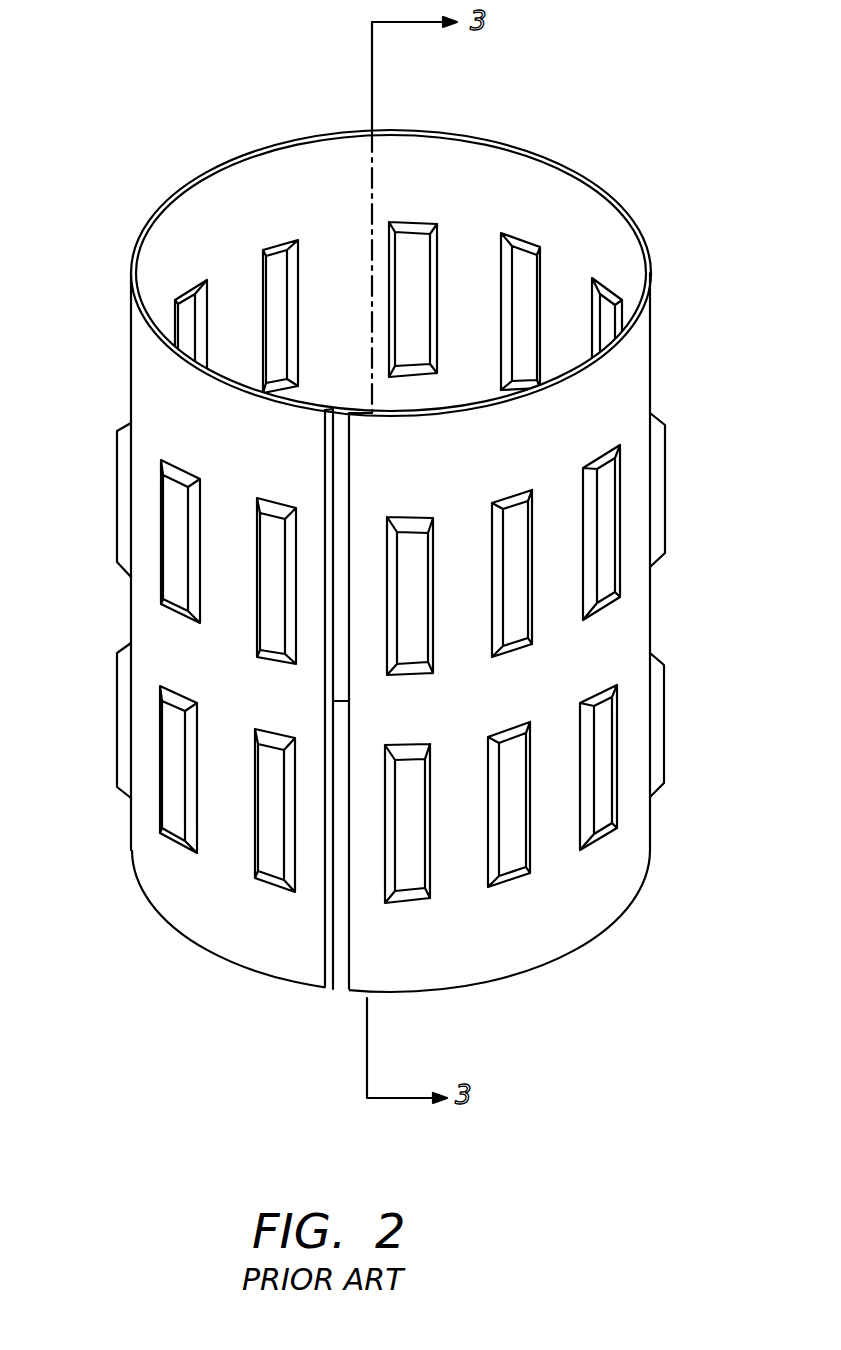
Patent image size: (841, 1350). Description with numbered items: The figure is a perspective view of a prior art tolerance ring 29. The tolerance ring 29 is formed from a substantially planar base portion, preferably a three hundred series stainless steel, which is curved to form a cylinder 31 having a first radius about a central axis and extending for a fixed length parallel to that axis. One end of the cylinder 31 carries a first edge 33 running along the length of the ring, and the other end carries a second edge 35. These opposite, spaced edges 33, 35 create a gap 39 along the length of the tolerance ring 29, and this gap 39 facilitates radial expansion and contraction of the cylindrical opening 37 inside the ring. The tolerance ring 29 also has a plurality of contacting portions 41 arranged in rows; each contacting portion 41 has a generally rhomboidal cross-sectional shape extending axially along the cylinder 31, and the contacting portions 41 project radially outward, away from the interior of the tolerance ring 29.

The tolerance ring 29 is at (642, 187).
The cylinder 31 is at (634, 373).
The first edge 33 is at (312, 958).
The second edge 35 is at (368, 950).
The cylindrical opening 37 is at (250, 207).
The gap 39 is at (337, 903).
The contacting portions 41 is at (172, 562).